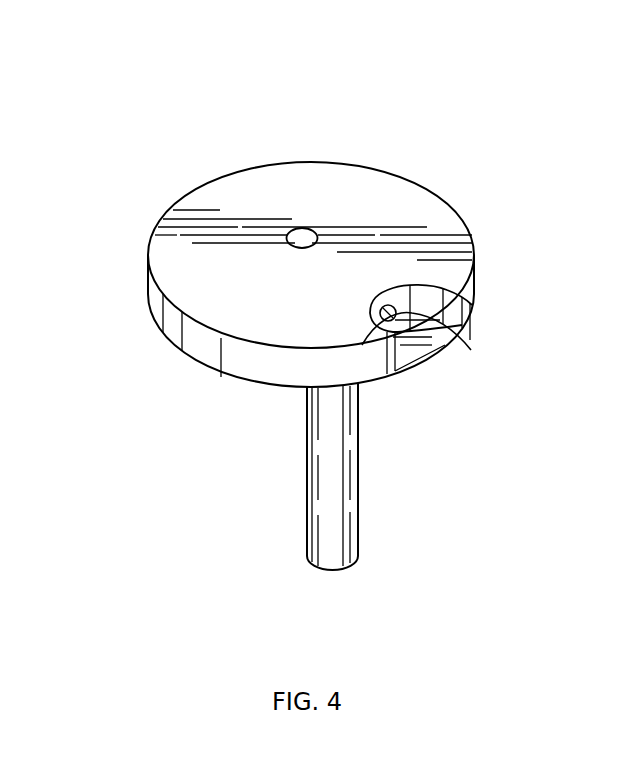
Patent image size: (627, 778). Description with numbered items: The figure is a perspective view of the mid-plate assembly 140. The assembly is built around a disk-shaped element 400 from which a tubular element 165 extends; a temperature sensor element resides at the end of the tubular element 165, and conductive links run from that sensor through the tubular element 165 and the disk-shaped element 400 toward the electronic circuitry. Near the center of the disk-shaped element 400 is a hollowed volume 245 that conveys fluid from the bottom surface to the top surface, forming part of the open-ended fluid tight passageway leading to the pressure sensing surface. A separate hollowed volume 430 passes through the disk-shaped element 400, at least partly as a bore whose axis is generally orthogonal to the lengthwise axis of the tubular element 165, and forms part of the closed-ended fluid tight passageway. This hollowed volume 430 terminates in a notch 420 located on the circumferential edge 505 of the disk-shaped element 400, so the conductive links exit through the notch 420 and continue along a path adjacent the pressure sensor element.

The mid-plate assembly 140 is at (308, 314).
The hollowed volume 245 is at (320, 230).
The circumferential edge 505 is at (450, 283).
The disk-shaped element 400 is at (153, 308).
The hollowed volume 430 is at (400, 326).
The notch 420 is at (406, 331).
The tubular element 165 is at (323, 507).